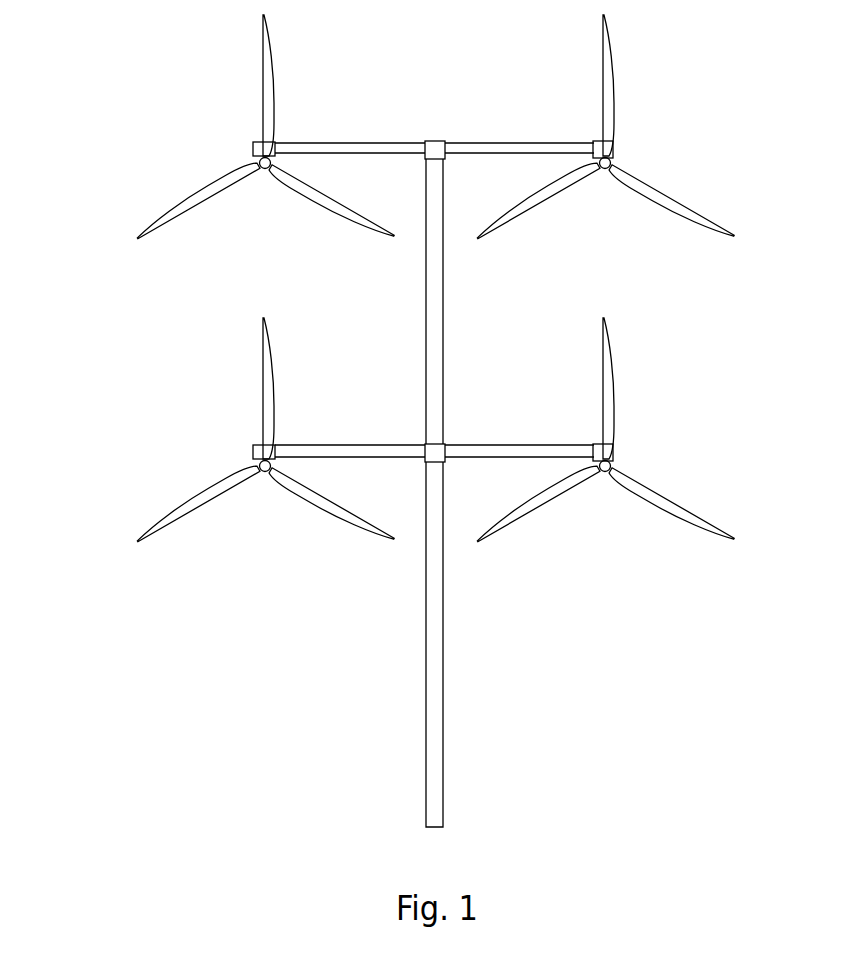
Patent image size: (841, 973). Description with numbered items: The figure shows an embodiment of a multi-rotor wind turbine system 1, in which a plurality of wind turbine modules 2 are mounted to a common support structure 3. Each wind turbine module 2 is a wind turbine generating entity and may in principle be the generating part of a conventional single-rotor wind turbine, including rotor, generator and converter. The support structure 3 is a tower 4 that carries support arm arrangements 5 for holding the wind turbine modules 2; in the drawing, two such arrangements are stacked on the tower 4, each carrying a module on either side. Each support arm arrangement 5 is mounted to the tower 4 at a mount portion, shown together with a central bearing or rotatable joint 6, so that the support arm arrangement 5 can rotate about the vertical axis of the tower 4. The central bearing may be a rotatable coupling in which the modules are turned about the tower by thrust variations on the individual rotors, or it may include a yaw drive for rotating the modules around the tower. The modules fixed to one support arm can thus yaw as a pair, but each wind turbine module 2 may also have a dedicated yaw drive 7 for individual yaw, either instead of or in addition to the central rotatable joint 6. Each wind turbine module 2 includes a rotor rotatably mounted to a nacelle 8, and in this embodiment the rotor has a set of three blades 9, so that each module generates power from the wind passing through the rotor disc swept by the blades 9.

The multi-rotor wind turbine system 1 is at (127, 102).
The wind turbine module 2 is at (572, 248).
The support structure 3 is at (455, 352).
The tower 4 is at (424, 645).
The support arm arrangement 5 is at (494, 142).
The central bearing or rotatable joint 6 is at (426, 141).
The dedicated yaw drive 7 is at (635, 142).
The nacelle 8 is at (635, 451).
The blades 9 is at (631, 85).